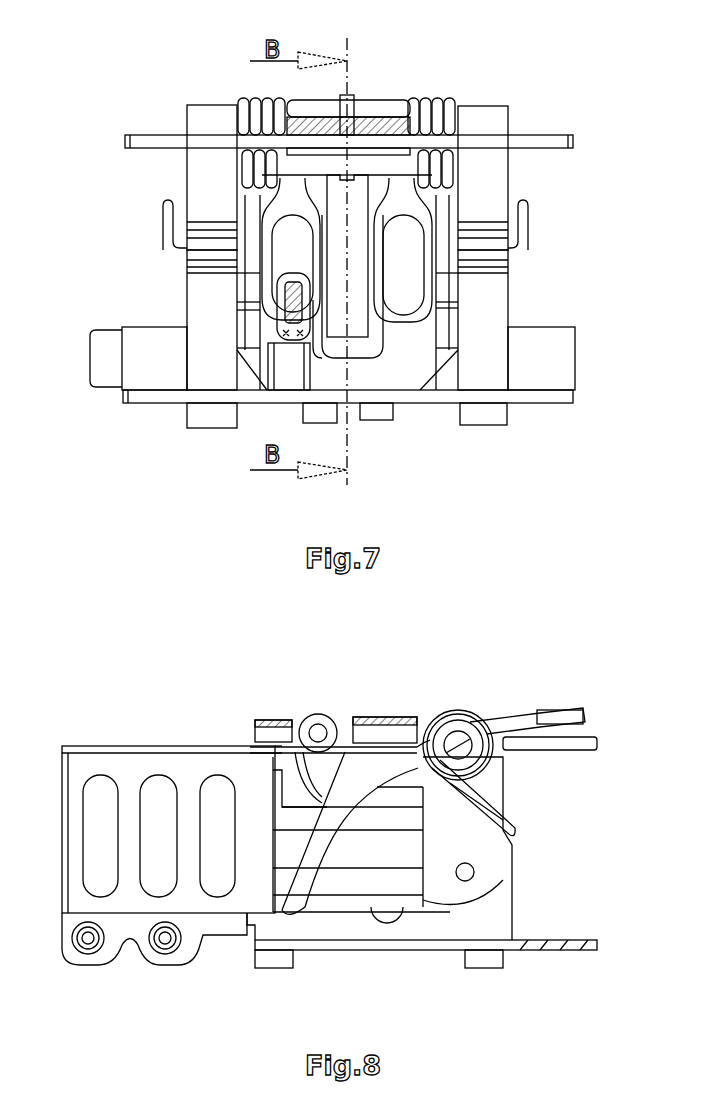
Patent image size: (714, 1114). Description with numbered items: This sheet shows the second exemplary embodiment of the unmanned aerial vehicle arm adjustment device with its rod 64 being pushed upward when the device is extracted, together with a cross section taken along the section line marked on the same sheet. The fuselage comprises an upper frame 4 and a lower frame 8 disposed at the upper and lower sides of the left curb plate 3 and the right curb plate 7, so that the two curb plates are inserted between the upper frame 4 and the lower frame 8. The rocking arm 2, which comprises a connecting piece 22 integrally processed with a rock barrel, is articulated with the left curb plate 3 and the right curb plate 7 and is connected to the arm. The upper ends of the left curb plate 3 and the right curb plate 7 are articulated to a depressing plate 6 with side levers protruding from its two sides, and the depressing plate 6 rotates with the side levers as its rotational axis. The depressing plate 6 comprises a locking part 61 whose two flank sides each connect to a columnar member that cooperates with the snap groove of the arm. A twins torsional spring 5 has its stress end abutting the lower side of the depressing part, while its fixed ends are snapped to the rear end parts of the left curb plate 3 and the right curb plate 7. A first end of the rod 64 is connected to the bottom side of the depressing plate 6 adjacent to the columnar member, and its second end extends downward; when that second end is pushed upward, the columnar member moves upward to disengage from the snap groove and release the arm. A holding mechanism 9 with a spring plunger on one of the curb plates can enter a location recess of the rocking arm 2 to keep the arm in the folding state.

In FIG. 8, the rocking arm 2 is at (188, 763).
In FIG. 7, the left curb plate 3 is at (492, 196).
In FIG. 8, the left curb plate 3 is at (487, 923).
In FIG. 7, the upper frame 4 is at (538, 137).
In FIG. 8, the upper frame 4 is at (580, 755).
In FIG. 7, the twins torsional spring 5 is at (450, 102).
In FIG. 8, the twins torsional spring 5 is at (475, 797).
In FIG. 7, the depressing plate 6 is at (367, 108).
In FIG. 8, the depressing plate 6 is at (455, 732).
In FIG. 7, the right curb plate 7 is at (207, 180).
In FIG. 7, the lower frame 8 is at (545, 403).
In FIG. 8, the lower frame 8 is at (560, 943).
In FIG. 7, the holding mechanism 9 is at (548, 358).
In FIG. 8, the connecting piece 22 is at (388, 847).
In FIG. 8, the locking part 61 is at (322, 730).
In FIG. 8, the rod 64 is at (320, 847).